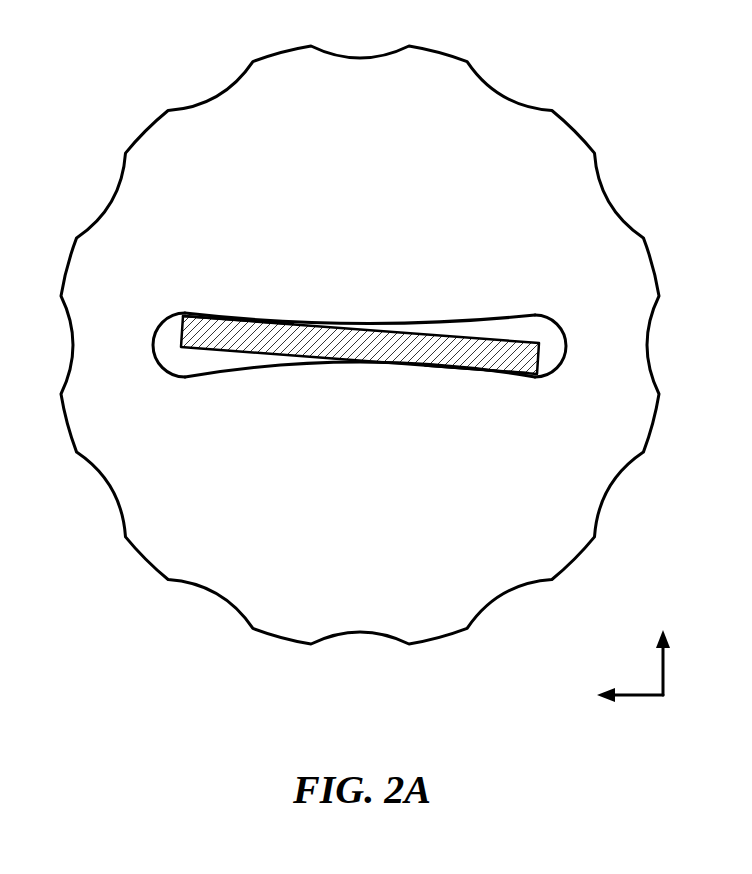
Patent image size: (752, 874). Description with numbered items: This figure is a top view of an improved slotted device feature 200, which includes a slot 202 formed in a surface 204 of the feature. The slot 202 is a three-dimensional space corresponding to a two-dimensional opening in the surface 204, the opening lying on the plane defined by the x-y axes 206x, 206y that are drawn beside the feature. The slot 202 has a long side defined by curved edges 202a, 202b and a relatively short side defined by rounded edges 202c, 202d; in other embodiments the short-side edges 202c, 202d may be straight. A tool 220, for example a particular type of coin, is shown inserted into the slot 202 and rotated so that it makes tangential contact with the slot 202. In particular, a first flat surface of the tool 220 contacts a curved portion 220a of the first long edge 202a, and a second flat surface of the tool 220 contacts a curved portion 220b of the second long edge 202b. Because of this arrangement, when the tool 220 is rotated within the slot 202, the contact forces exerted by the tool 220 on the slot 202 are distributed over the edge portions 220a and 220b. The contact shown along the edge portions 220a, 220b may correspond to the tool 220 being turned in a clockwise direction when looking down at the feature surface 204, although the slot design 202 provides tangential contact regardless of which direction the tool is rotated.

The device feature 200 is at (358, 323).
The surface 204 is at (382, 182).
The slot 202 is at (368, 343).
The first long edge 202a is at (375, 325).
The second long edge 202b is at (332, 368).
The rounded edge 202c is at (567, 345).
The rounded edge 202d is at (153, 348).
The tool 220 is at (460, 333).
The curved portion of first long edge 220a is at (293, 320).
The curved portion of second long edge 220b is at (528, 381).
The x-axis 206x is at (661, 646).
The y-axis 206y is at (599, 695).